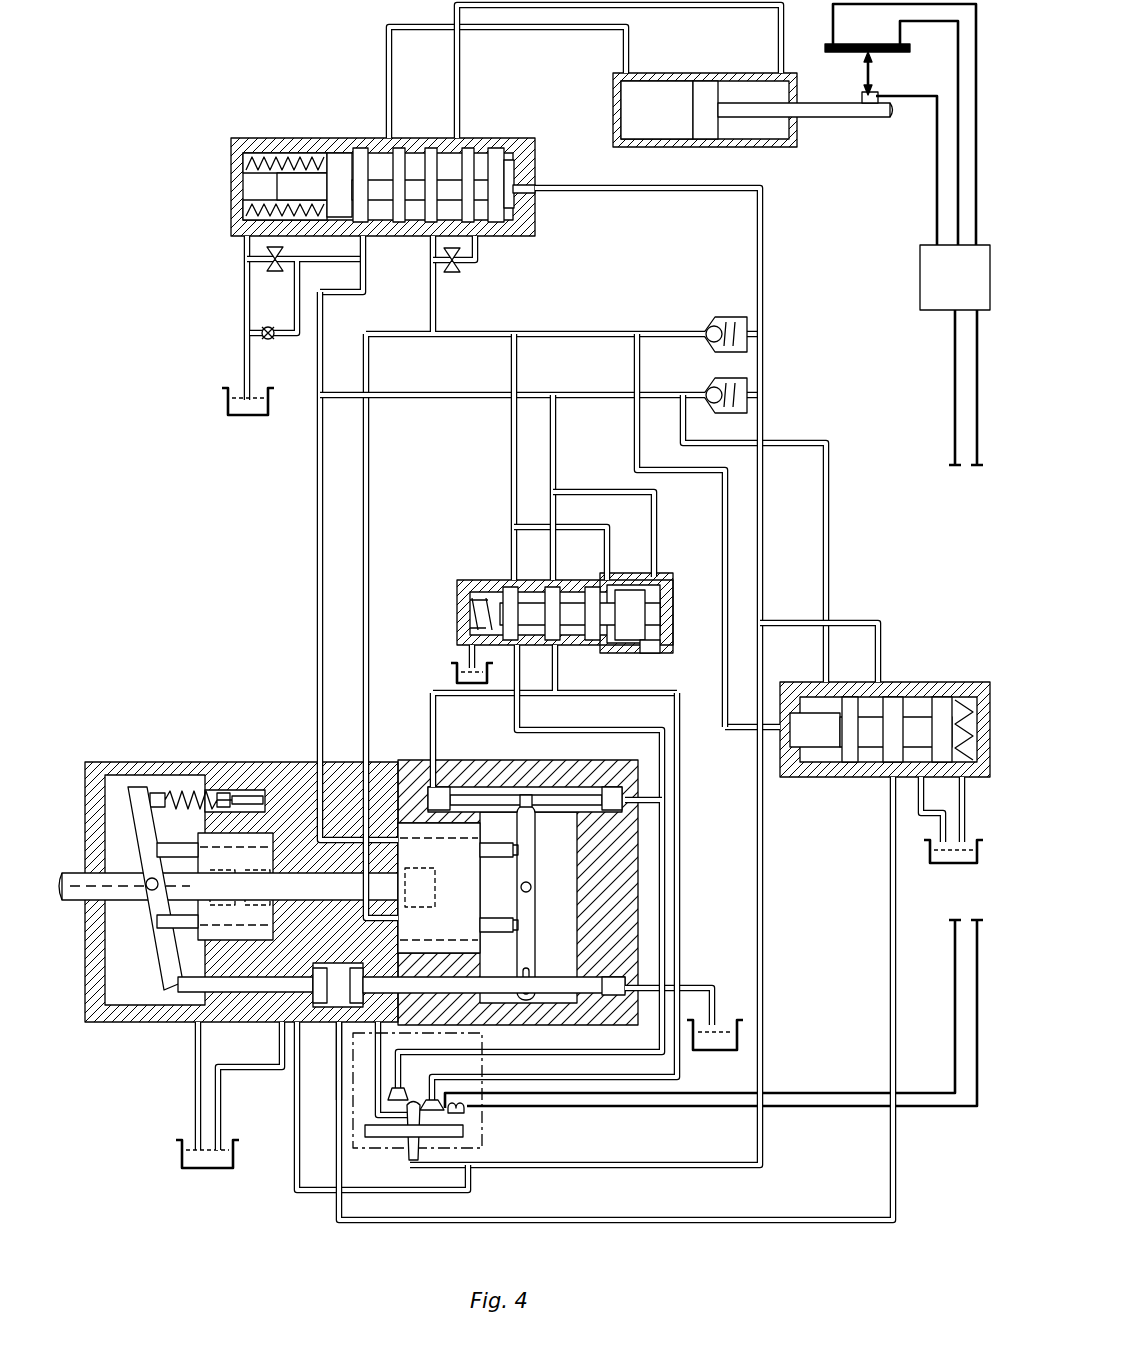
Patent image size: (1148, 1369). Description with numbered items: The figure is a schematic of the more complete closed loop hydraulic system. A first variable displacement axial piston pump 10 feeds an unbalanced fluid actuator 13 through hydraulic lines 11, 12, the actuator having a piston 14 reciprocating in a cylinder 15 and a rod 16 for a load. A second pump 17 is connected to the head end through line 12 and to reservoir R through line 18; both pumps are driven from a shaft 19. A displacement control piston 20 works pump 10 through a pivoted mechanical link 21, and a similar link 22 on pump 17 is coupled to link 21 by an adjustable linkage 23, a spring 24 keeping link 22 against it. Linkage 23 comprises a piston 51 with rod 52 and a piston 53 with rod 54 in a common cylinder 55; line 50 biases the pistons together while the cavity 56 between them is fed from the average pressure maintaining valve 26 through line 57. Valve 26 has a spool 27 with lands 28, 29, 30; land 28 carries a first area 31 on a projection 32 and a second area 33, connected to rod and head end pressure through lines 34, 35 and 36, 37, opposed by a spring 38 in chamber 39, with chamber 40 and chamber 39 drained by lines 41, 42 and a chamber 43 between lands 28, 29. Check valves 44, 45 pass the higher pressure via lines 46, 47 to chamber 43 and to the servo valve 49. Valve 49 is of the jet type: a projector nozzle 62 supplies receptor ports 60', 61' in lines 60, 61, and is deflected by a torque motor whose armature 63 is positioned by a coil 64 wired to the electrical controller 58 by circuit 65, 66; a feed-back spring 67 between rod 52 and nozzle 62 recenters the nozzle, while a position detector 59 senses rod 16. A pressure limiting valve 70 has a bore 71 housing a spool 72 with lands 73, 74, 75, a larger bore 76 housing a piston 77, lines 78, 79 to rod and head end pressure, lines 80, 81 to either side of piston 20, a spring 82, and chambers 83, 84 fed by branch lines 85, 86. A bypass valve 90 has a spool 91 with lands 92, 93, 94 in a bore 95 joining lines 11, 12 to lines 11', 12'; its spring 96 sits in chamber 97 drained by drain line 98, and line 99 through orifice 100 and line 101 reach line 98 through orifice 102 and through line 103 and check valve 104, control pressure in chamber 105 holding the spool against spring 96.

The first variable displacement axial piston pump 10 is at (466, 762).
The hydraulic line 11 is at (535, 577).
The line 11' is at (619, 71).
The hydraulic line 12 is at (324, 566).
The line 12' is at (472, 78).
The unbalanced fluid actuator 13 is at (712, 72).
The piston 14 is at (708, 135).
The cylinder 15 is at (660, 135).
The rod 16 is at (830, 118).
The second variable displacement axial piston pump 17 is at (246, 762).
The line 18 is at (242, 1066).
The shaft 19 is at (120, 900).
The displacement control piston 20 is at (568, 796).
The pivoted mechanical link 21 is at (532, 870).
The link 22 is at (160, 962).
The adjustable linkage 23 is at (408, 905).
The spring 24 is at (188, 790).
The average pressure maintaining valve 26 is at (780, 750).
The spool 27 is at (872, 778).
The land 28 is at (848, 778).
The land 29 is at (898, 700).
The land 30 is at (940, 680).
The first area 31 is at (792, 710).
The projection 32 is at (815, 745).
The second area 33 is at (830, 775).
The line 34 is at (722, 533).
The line 35 is at (600, 312).
The line 36 is at (798, 442).
The line 37 is at (428, 398).
The spring 38 is at (966, 700).
The chamber 39 is at (948, 778).
The chamber 40 is at (942, 700).
The line 41 is at (923, 832).
The line 42 is at (972, 865).
The chamber 43 is at (850, 700).
The check valve 44 is at (708, 322).
The check valve 45 is at (708, 386).
The line 46 is at (797, 622).
The line 47 is at (762, 500).
The servo valve 49 is at (478, 1147).
The line 50 is at (312, 1193).
The piston 51 is at (395, 962).
The rod 52 is at (505, 996).
The piston 53 is at (300, 972).
The rod 54 is at (180, 1024).
The common cylinder 55 is at (335, 962).
The cavity 56 is at (326, 1024).
The line 57 is at (890, 948).
The electrical controller 58 is at (918, 288).
The position detector 59 is at (872, 72).
The line 60 is at (581, 896).
The receptor port 60' is at (475, 1080).
The line 61 is at (564, 944).
The receptor port 61' is at (415, 1074).
The projector nozzle 62 is at (405, 1130).
The armature 63 is at (465, 1131).
The coil 64 is at (468, 1112).
The electric circuit 65 is at (952, 380).
The electric circuit 66 is at (975, 415).
The feed-back spring 67 is at (400, 1022).
The pressure limiting valve 70 is at (455, 609).
The bore 71 is at (462, 600).
The spool 72 is at (525, 646).
The land 73 is at (508, 592).
The land 74 is at (550, 592).
The land 75 is at (592, 592).
The larger bore 76 is at (668, 648).
The piston 77 is at (650, 653).
The line 78 is at (510, 466).
The line 79 is at (557, 445).
The line 80 is at (565, 646).
The line 81 is at (522, 712).
The spring 82 is at (462, 635).
The valve chamber 83 is at (618, 650).
The valve chamber 84 is at (650, 605).
The branch line 85 is at (578, 525).
The branch line 86 is at (620, 492).
The bypass valve 90 is at (532, 135).
The spool 91 is at (380, 178).
The land 92 is at (338, 170).
The land 93 is at (412, 178).
The land 94 is at (495, 176).
The bore 95 is at (285, 160).
The spring 96 is at (245, 162).
The chamber 97 is at (245, 210).
The drain line 98 is at (244, 350).
The line 99 is at (482, 256).
The orifice 100 is at (462, 272).
The line 101 is at (400, 258).
The orifice 102 is at (285, 250).
The line 103 is at (300, 312).
The check valve 104 is at (262, 328).
The chamber 105 is at (525, 190).